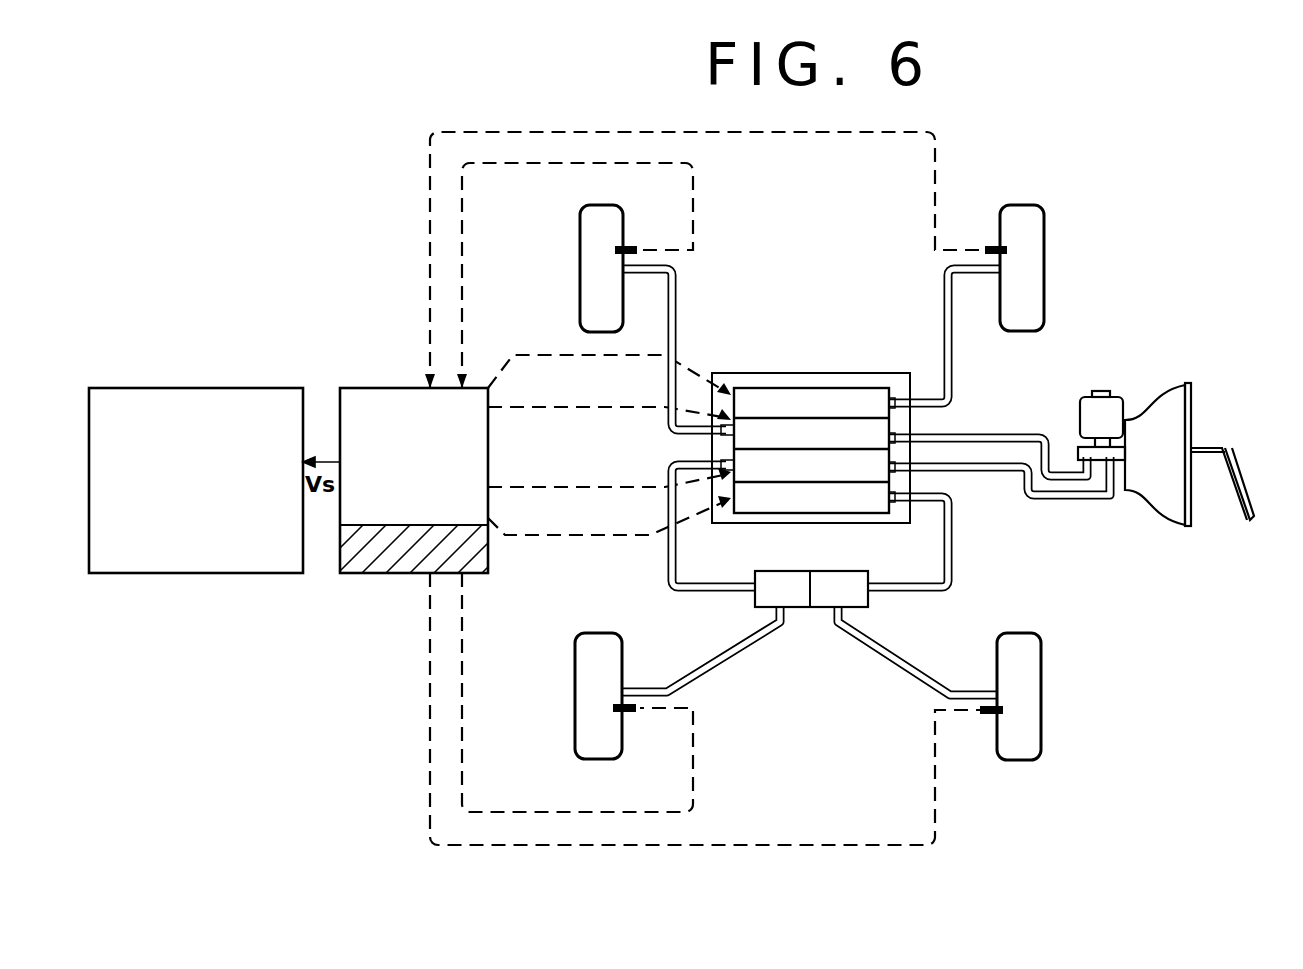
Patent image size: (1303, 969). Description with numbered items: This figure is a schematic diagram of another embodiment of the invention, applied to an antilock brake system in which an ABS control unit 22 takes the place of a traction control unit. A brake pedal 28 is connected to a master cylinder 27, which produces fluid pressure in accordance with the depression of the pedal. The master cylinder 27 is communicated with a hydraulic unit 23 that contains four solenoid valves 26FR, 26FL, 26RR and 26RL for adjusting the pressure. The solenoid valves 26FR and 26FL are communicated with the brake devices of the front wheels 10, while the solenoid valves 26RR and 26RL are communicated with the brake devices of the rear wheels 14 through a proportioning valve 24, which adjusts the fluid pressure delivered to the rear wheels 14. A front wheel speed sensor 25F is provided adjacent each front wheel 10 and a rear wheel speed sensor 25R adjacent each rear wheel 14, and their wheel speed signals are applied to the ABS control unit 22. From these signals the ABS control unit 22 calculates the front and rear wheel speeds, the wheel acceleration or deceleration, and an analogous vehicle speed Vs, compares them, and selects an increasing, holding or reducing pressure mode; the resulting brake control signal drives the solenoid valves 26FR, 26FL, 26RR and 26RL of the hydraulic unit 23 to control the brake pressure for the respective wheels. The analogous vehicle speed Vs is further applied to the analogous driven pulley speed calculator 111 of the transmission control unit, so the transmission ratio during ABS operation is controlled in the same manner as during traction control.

The driven pulley speed calculator 111 is at (280, 388).
The ABS control unit 22 is at (381, 388).
The front wheels 10 is at (580, 216).
The rear wheels 14 is at (575, 720).
The front wheel speed sensor 25F is at (636, 246).
The rear wheel speed sensor 25R is at (628, 712).
The hydraulic unit 23 is at (770, 373).
The solenoid valve 26FR is at (878, 410).
The solenoid valve 26FL is at (898, 420).
The solenoid valve 26RL is at (893, 472).
The solenoid valve 26RR is at (878, 498).
The proportioning valve 24 is at (806, 607).
The master cylinder 27 is at (1080, 447).
The brake pedal 28 is at (1240, 490).